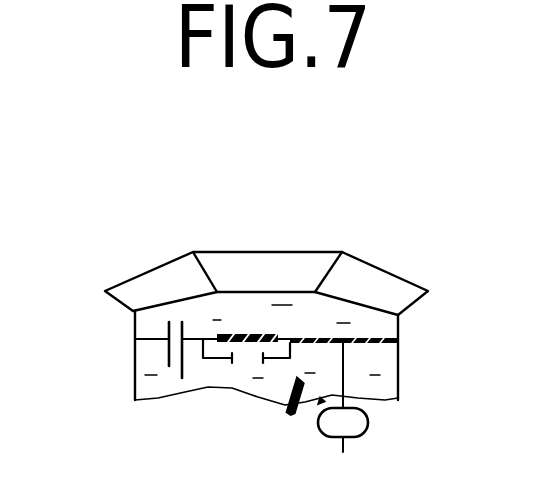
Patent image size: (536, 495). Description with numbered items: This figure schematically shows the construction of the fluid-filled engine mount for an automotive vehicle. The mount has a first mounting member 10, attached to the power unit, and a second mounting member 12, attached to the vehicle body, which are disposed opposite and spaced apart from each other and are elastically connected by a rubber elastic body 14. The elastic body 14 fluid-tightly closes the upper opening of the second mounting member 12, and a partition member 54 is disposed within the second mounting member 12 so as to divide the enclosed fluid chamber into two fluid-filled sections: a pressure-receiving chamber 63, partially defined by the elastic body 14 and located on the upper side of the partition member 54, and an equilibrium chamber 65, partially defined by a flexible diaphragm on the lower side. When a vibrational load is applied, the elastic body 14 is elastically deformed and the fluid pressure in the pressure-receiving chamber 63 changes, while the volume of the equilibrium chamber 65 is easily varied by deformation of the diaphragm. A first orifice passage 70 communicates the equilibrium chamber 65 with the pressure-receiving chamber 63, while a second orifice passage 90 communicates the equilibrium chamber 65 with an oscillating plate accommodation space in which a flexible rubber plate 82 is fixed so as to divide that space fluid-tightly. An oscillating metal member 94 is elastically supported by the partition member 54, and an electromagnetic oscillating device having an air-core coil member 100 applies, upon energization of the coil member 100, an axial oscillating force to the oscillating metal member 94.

The first mounting member 10 is at (305, 272).
The second mounting member 12 is at (398, 377).
The elastic body 14 is at (172, 280).
The partition member 54 is at (166, 337).
The pressure-receiving chamber 63 is at (405, 278).
The equilibrium chamber 65 is at (400, 398).
The first orifice passage 70 is at (172, 362).
The flexible rubber plate 82 is at (250, 334).
The second orifice passage 90 is at (237, 358).
The oscillating metal member 94 is at (332, 345).
The coil member 100 is at (350, 437).